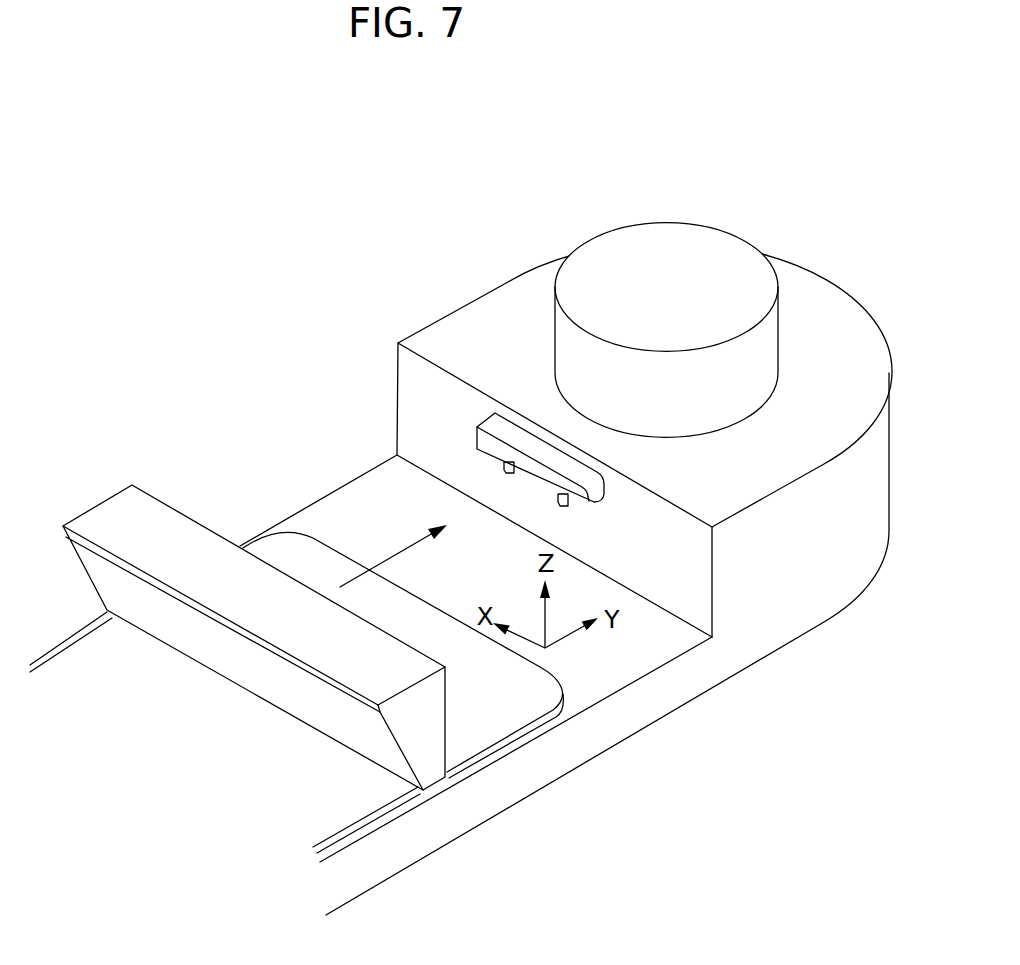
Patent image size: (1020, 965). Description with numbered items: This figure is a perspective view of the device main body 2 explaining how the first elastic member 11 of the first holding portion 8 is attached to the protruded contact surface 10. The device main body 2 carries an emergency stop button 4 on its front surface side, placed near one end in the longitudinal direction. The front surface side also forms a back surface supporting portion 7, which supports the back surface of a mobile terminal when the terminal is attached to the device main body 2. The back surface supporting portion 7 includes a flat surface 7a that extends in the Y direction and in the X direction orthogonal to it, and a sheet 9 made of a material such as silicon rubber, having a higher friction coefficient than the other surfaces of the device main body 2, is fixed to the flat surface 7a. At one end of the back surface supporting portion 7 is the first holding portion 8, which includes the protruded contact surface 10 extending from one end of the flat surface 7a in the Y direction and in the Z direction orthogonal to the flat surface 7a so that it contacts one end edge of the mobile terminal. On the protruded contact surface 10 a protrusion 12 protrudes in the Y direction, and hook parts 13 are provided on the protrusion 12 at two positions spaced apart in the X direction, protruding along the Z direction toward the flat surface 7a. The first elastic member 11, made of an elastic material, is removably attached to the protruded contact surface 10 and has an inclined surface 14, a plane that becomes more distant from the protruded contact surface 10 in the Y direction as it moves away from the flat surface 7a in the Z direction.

The device main body 2 is at (476, 249).
The emergency stop button 4 is at (670, 283).
The back surface supporting portion 7 is at (377, 484).
The flat surface 7a is at (328, 520).
The first holding portion 8 is at (277, 283).
The sheet 9 is at (276, 548).
The protruded contact surface 10 is at (420, 393).
The first elastic member 11 is at (176, 496).
The protrusion 12 is at (530, 467).
The hook parts 13 is at (503, 468).
The inclined surface 14 is at (213, 643).